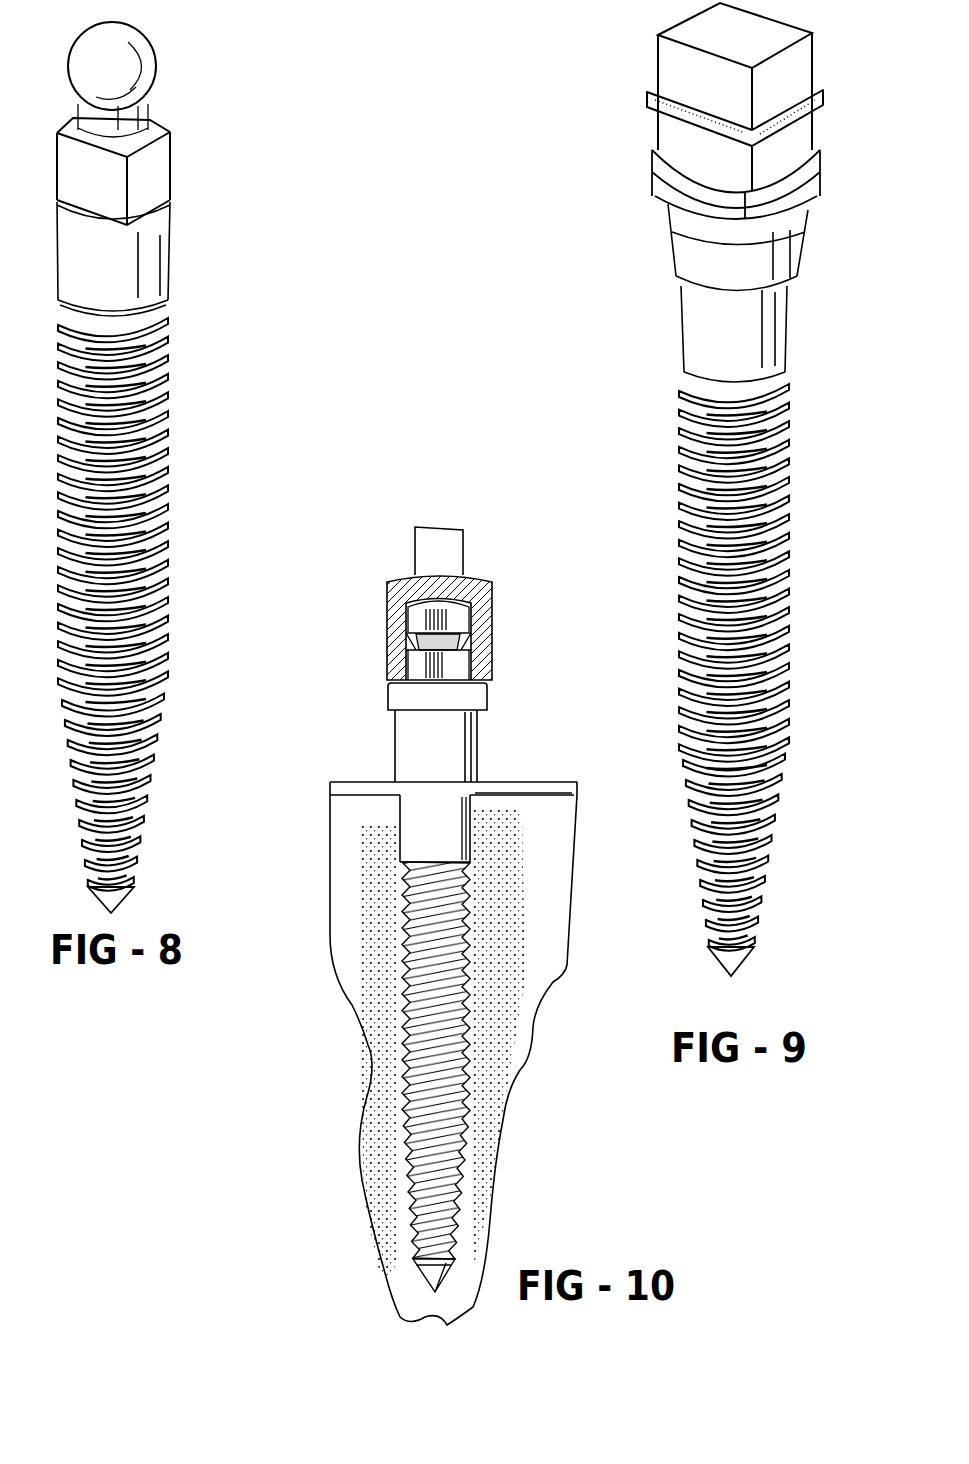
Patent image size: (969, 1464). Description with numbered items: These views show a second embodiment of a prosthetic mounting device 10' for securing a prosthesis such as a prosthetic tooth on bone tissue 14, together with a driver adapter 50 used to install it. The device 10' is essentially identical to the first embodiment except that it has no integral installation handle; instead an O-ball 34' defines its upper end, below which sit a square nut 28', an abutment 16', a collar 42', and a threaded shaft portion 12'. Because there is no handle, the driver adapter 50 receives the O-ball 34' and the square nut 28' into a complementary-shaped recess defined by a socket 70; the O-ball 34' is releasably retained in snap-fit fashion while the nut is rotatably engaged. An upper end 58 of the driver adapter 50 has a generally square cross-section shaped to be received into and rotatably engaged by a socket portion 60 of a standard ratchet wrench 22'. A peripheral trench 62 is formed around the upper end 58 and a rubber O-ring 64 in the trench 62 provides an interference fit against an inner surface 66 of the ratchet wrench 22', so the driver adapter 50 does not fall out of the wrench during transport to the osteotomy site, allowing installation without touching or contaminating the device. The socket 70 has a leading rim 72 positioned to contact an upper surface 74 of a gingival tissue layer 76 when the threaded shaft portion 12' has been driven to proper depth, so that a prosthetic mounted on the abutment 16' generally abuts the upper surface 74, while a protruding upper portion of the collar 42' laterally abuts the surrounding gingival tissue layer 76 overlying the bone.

In FIG. 8, the prosthetic mounting device 10' is at (182, 467).
In FIG. 9, the prosthetic mounting device 10' is at (732, 489).
In FIG. 10, the prosthetic mounting device 10' is at (416, 897).
In FIG. 8, the threaded shaft portion 12' is at (140, 615).
In FIG. 9, the threaded shaft portion 12' is at (762, 680).
In FIG. 10, the threaded shaft portion 12' is at (487, 1077).
In FIG. 10, the bone tissue 14 is at (532, 926).
In FIG. 8, the abutment 16' is at (172, 121).
In FIG. 10, the ratchet wrench 22' is at (439, 521).
In FIG. 8, the square nut 28' is at (162, 174).
In FIG. 8, the O-ball 34' is at (170, 66).
In FIG. 8, the collar 42' is at (159, 259).
In FIG. 9, the collar 42' is at (771, 334).
In FIG. 10, the collar 42' is at (369, 844).
In FIG. 9, the driver adapter 50 is at (688, 161).
In FIG. 10, the driver adapter 50 is at (422, 625).
In FIG. 9, the upper end of the driver adapter 58 is at (792, 60).
In FIG. 10, the upper end of the driver adapter 58 is at (457, 597).
In FIG. 10, the socket portion 60 is at (408, 582).
In FIG. 10, the peripheral trench 62 is at (448, 645).
In FIG. 9, the O-ring 64 is at (647, 100).
In FIG. 10, the O-ring 64 is at (473, 645).
In FIG. 10, the inner surface of the ratchet wrench 66 is at (473, 627).
In FIG. 9, the socket 70 is at (762, 262).
In FIG. 10, the socket 70 is at (445, 757).
In FIG. 9, the leading rim 72 is at (710, 292).
In FIG. 10, the leading rim 72 is at (420, 784).
In FIG. 10, the upper surface of the gingival tissue layer 74 is at (548, 781).
In FIG. 10, the gingival tissue layer 76 is at (563, 790).